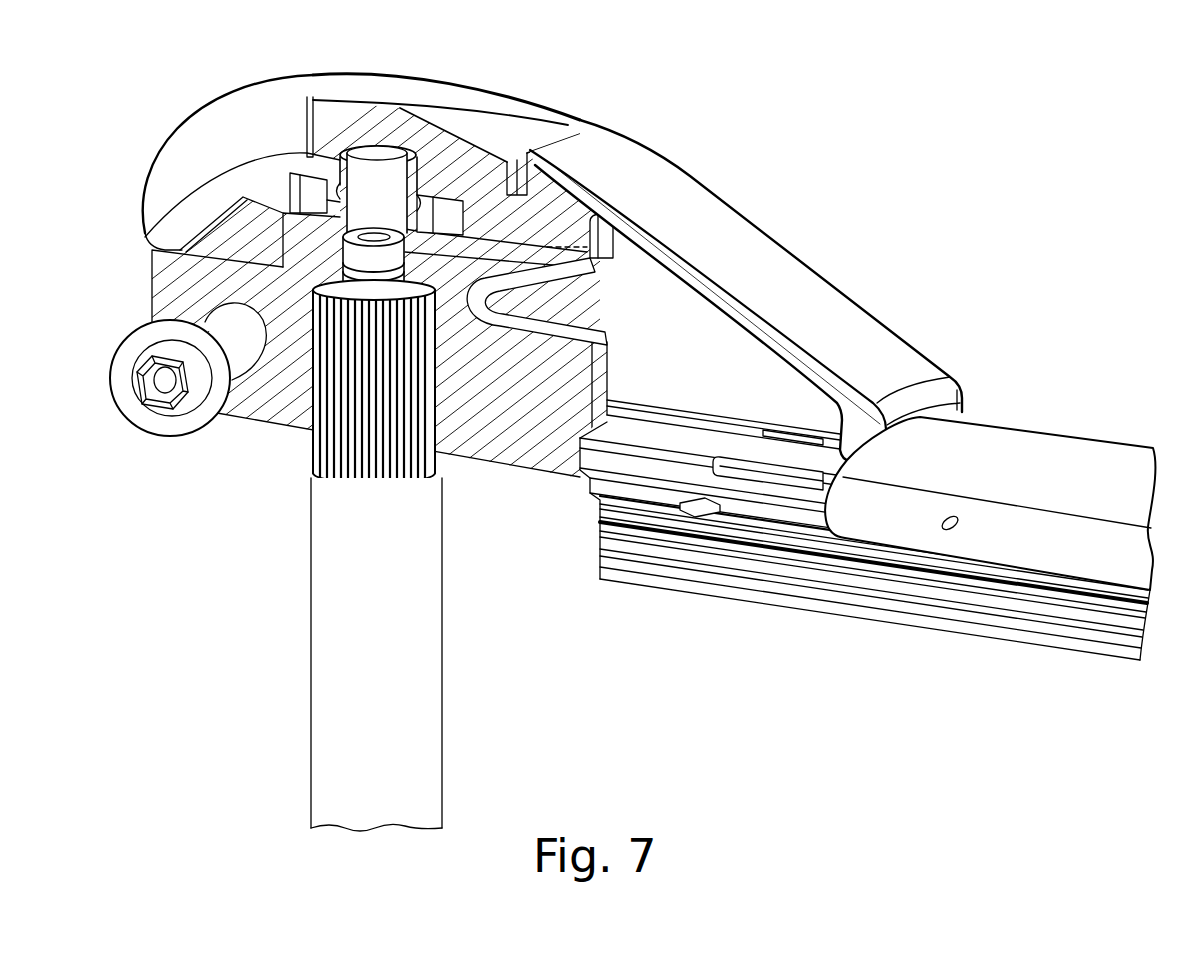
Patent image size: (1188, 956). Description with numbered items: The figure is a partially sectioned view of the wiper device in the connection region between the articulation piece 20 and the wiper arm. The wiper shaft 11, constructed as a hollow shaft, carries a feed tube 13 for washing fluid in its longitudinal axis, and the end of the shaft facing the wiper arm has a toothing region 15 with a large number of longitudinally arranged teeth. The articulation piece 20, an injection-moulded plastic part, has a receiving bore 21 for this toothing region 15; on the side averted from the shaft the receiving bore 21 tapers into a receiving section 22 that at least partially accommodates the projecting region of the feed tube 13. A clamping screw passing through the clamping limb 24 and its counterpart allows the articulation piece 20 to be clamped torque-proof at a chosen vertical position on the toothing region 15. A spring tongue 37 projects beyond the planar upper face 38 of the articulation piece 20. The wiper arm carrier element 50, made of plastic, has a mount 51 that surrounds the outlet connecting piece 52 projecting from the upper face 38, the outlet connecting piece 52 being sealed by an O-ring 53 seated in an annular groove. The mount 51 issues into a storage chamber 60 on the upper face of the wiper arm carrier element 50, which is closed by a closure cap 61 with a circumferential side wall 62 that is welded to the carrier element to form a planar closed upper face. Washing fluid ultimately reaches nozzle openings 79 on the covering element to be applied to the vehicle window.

The wiper shaft 11 is at (442, 660).
The feed tube 13 is at (152, 281).
The toothing region 15 is at (330, 447).
The articulation piece 20 is at (270, 397).
The receiving bore 21 is at (447, 408).
The receiving section 22 is at (598, 222).
The clamping limb 24 is at (165, 302).
The spring tongue 37 is at (573, 268).
The upper face 38 is at (479, 163).
The wiper arm carrier element 50 is at (827, 269).
The mount 51 is at (145, 222).
The outlet connecting piece 52 is at (180, 162).
The O-ring 53 is at (418, 200).
The storage chamber 60 is at (563, 103).
The closure cap 61 is at (402, 90).
The side wall 62 is at (317, 98).
The nozzle opening 79 is at (945, 527).